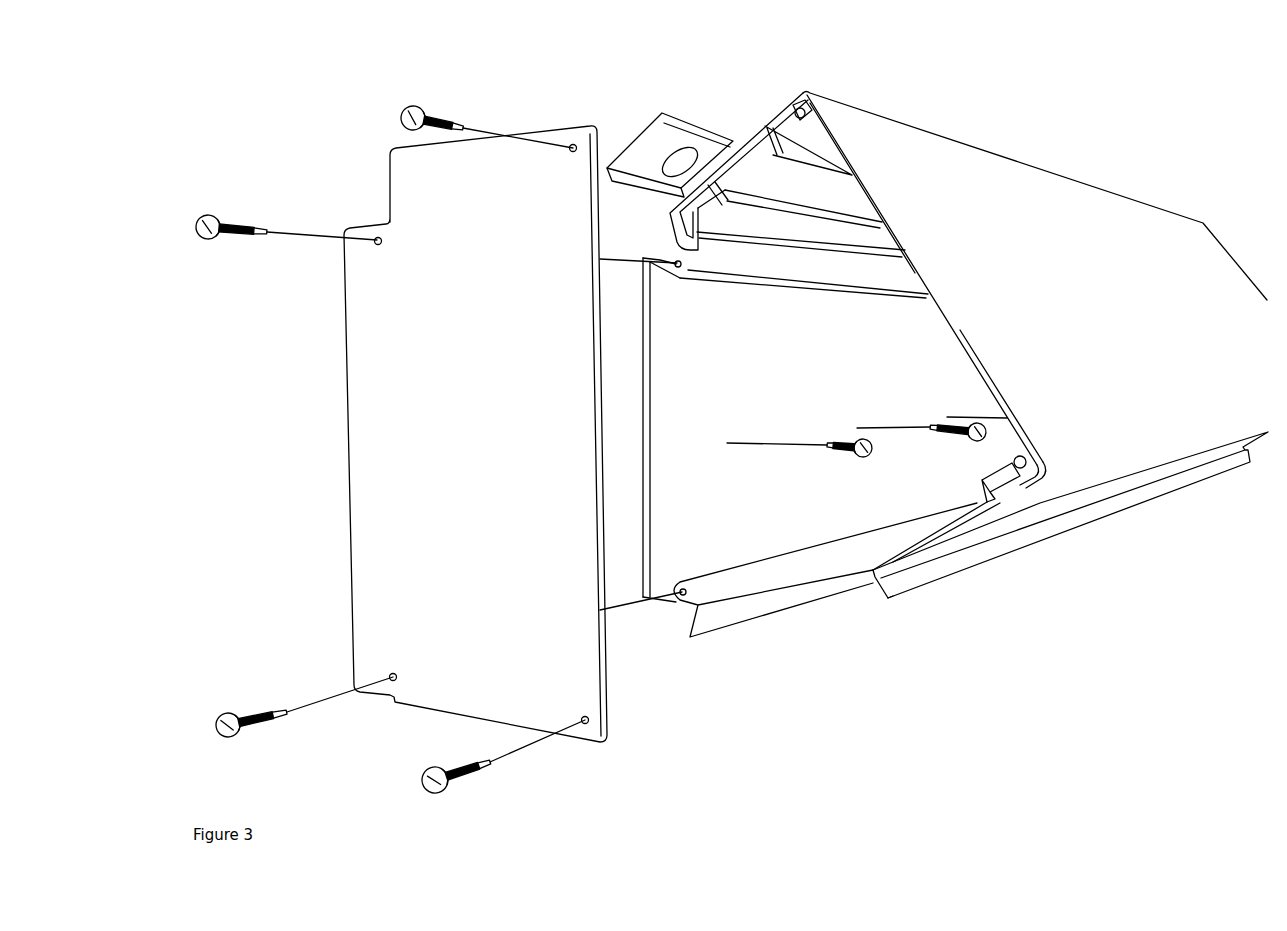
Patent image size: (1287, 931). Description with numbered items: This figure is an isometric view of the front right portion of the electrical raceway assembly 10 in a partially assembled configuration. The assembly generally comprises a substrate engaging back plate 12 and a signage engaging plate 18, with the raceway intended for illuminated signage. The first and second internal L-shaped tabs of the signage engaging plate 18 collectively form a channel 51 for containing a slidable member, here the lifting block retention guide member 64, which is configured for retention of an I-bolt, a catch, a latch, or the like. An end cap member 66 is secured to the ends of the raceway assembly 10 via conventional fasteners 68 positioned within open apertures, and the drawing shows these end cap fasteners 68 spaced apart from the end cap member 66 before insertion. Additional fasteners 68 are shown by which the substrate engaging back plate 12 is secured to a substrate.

The raceway assembly 10 is at (1088, 627).
The substrate engaging back plate 12 is at (746, 377).
The signage engaging plate 18 is at (1106, 312).
The channel 51 is at (757, 150).
The lifting block retention guide member 64 is at (697, 130).
The end cap member 66 is at (471, 418).
The fasteners 68 is at (412, 107).